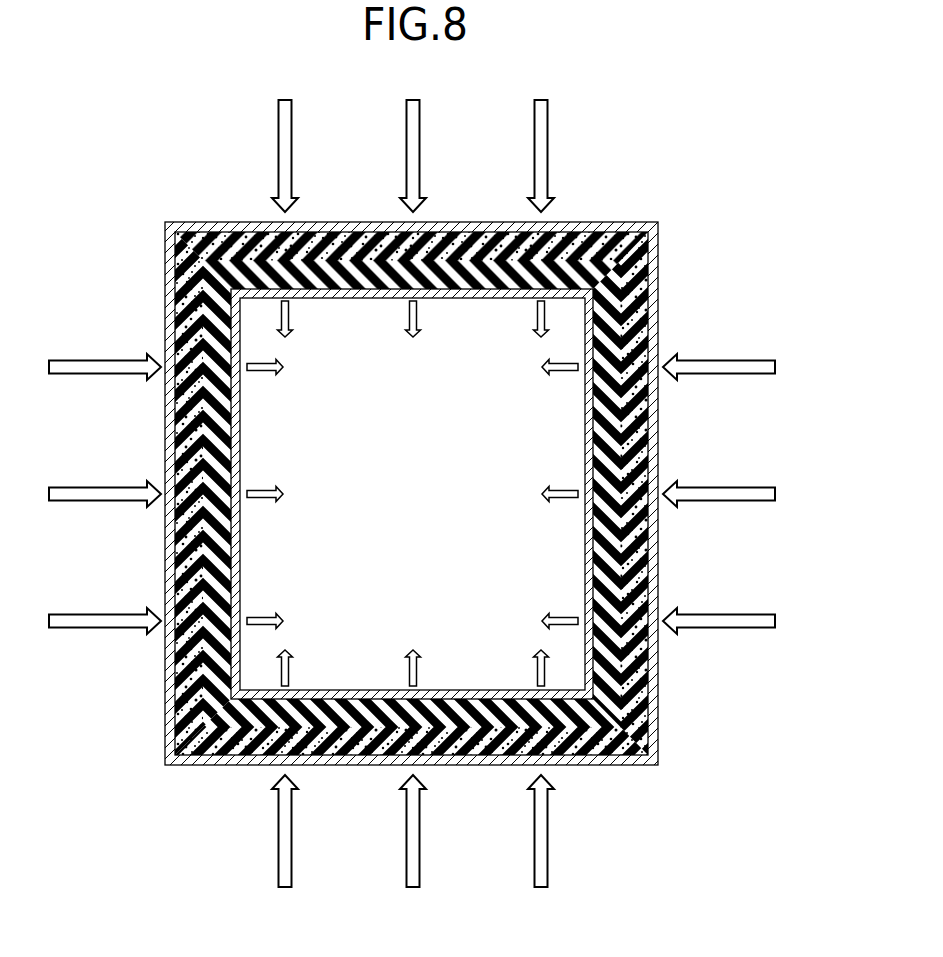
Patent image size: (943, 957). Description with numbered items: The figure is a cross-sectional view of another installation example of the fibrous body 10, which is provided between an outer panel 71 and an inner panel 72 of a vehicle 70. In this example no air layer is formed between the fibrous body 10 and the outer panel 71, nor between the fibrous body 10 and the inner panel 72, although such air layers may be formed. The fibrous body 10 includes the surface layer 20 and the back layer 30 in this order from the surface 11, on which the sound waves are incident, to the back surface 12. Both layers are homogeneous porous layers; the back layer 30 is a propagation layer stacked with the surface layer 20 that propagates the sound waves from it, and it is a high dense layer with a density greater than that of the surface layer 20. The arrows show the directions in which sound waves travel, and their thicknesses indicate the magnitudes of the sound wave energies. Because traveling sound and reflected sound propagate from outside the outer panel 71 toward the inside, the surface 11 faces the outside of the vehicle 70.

The fibrous body 10 is at (740, 655).
The surface 11 is at (652, 535).
The back surface 12 is at (586, 573).
The surface layer 20 is at (637, 663).
The back layer 30 is at (608, 703).
The vehicle 70 is at (740, 283).
The outer panel 71 is at (660, 296).
The inner panel 72 is at (584, 329).